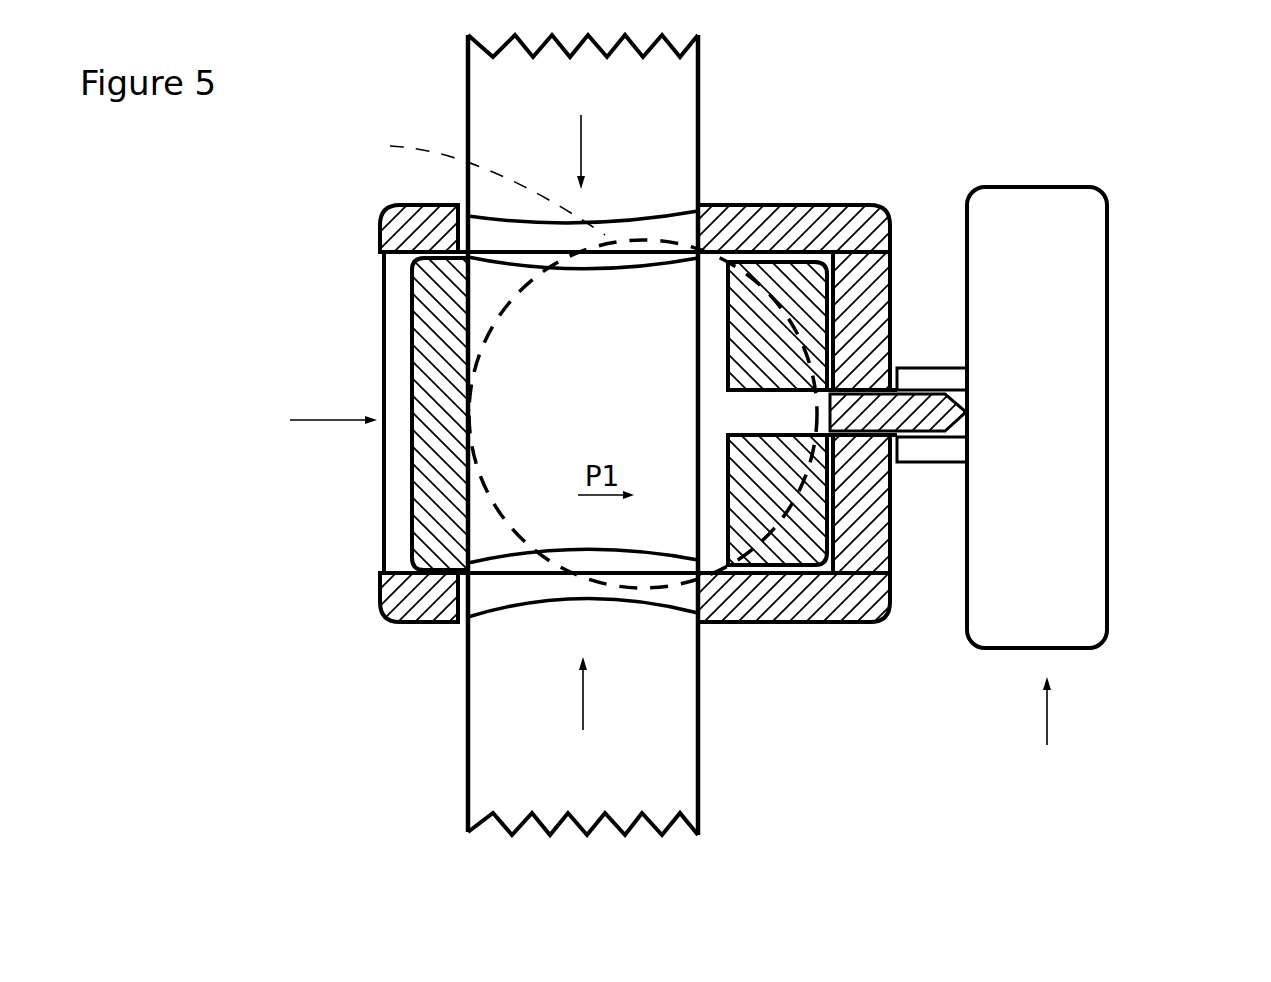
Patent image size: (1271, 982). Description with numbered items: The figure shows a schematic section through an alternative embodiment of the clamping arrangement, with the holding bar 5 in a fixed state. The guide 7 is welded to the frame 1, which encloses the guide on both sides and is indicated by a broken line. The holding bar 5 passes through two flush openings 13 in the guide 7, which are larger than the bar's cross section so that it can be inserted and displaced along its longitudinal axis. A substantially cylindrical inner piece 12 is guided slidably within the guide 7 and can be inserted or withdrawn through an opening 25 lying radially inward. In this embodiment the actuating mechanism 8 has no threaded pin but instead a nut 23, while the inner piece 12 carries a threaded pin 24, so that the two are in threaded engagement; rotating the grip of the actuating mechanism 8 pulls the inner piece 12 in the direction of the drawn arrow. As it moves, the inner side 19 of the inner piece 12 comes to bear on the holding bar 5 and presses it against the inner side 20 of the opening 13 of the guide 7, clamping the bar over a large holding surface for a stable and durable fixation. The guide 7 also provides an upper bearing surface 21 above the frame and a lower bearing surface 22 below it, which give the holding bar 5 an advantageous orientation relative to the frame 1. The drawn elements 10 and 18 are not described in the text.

The frame 1 is at (483, 179).
The holding bar 5 is at (478, 80).
The guide 7 is at (373, 664).
The actuating mechanism 8 is at (1047, 737).
The wheel 10 is at (1096, 330).
The inner piece 12 is at (418, 518).
The openings 13 is at (583, 426).
The right clamping block 18 is at (825, 565).
The inner side 19 is at (468, 310).
The inner side 20 is at (688, 604).
The bearing surface 21 is at (710, 210).
The bearing surface 22 is at (708, 610).
The nut 23 is at (963, 447).
The threaded pin 24 is at (928, 388).
The opening 25 is at (306, 420).